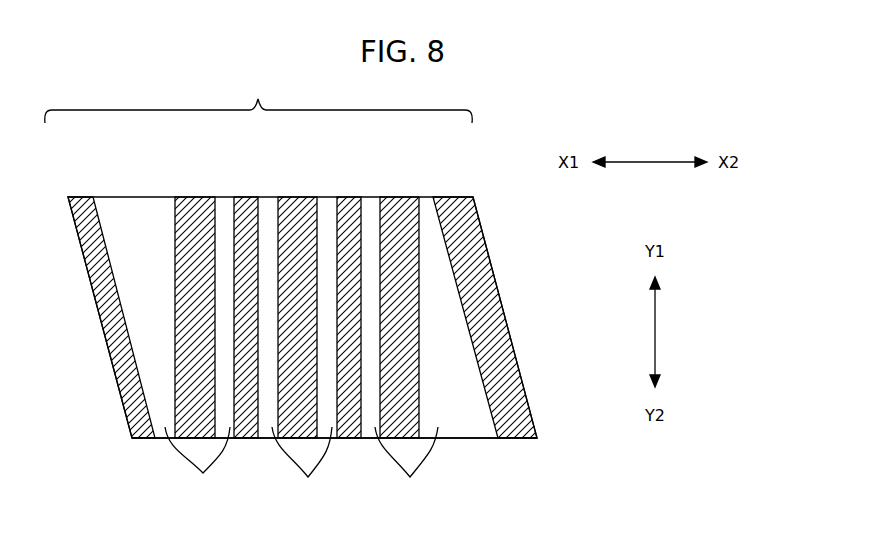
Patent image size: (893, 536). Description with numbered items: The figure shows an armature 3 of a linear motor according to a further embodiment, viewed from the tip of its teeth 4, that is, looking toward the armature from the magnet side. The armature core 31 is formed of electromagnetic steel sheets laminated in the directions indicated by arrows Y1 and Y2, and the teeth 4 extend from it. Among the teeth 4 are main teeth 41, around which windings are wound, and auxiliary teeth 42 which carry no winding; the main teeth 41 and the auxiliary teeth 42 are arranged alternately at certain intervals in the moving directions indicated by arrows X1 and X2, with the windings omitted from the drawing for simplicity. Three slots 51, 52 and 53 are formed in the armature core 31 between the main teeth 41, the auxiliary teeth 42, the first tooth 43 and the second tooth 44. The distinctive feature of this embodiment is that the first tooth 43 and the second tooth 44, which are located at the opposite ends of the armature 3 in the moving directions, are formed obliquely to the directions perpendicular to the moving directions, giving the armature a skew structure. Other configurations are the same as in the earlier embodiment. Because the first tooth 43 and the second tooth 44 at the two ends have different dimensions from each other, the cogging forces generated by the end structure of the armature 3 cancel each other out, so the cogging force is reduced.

The armature 3 is at (483, 171).
The teeth 4 is at (258, 99).
The main teeth 41 is at (195, 197).
The auxiliary teeth 42 is at (244, 197).
The first tooth 43 is at (82, 197).
The second tooth 44 is at (460, 197).
The slot 51 is at (197, 466).
The slot 52 is at (302, 466).
The slot 53 is at (406, 466).
The armature core 31 is at (475, 438).